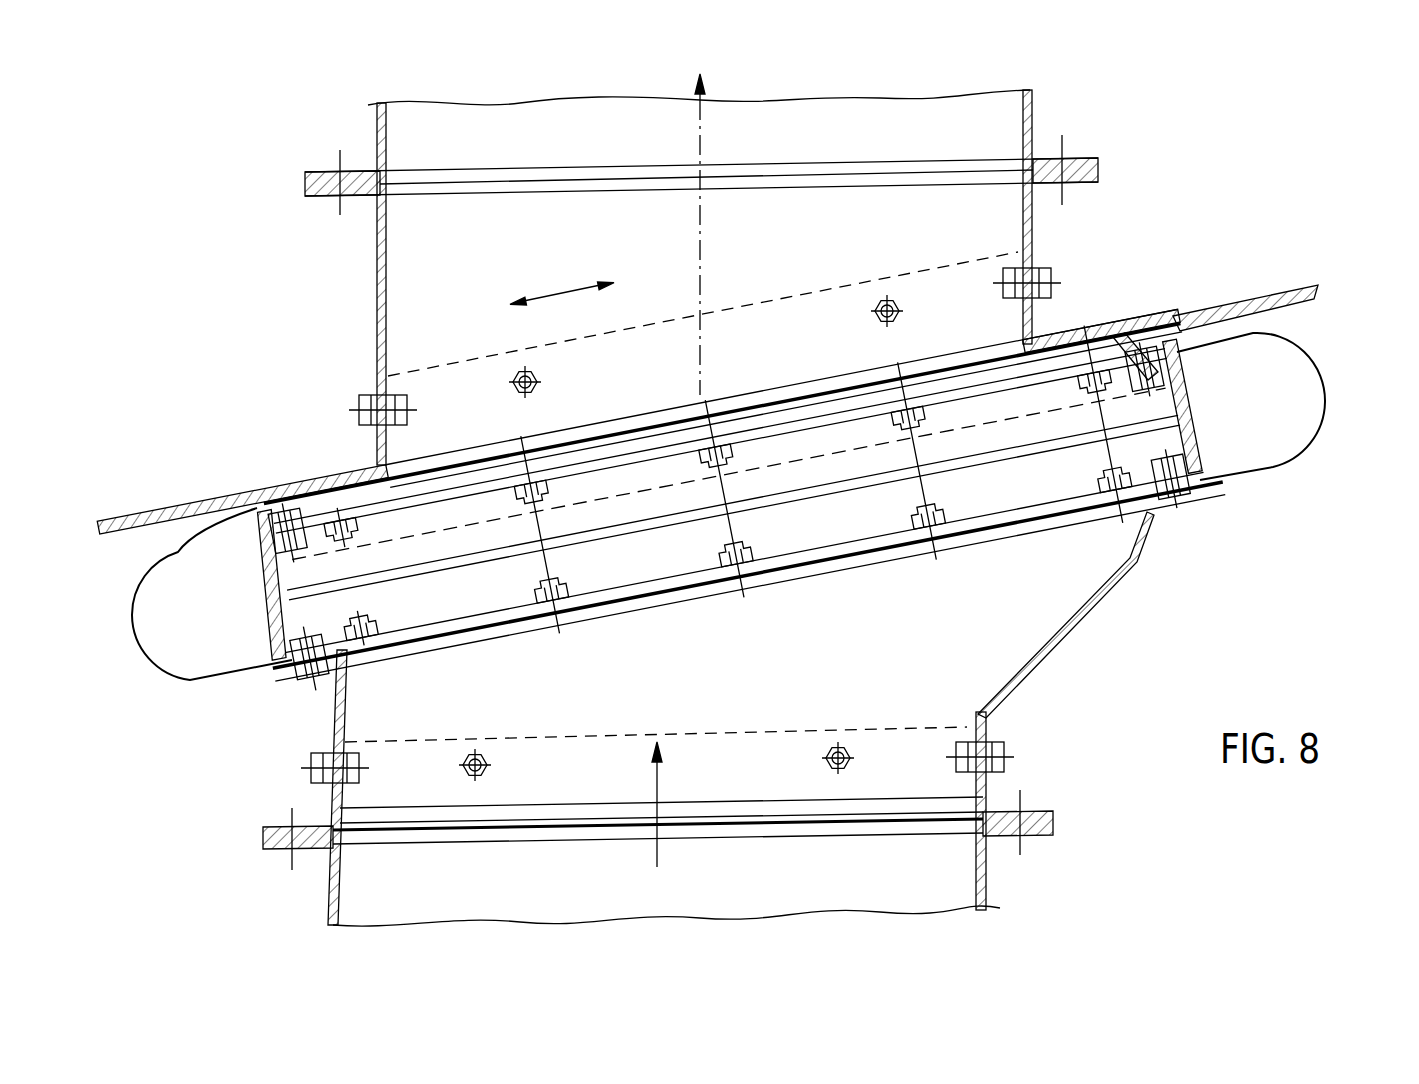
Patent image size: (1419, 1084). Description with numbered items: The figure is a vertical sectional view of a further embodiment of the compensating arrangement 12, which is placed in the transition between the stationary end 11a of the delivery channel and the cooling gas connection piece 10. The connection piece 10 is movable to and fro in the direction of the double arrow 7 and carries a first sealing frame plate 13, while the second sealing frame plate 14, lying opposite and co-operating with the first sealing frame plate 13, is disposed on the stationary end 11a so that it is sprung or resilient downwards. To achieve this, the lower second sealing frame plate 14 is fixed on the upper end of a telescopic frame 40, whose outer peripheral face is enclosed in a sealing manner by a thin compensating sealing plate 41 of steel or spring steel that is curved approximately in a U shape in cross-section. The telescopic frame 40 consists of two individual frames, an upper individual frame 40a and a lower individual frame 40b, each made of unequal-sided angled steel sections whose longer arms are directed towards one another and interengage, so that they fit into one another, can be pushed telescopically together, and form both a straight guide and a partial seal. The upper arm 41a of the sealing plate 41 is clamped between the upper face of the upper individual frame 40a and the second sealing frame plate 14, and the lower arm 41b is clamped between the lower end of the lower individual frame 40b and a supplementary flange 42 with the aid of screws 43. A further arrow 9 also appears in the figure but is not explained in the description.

The double arrow 7 is at (562, 293).
The viewing direction 9 is at (660, 780).
The cooling gas connection piece 10 is at (993, 233).
The stationary end of the delivery channel 11a is at (986, 710).
The compensating arrangement 12 is at (318, 422).
The first sealing frame plate 13 is at (1212, 306).
The second sealing frame plate 14 is at (1187, 324).
The telescopic frame 40 is at (250, 607).
The upper individual frame 40a is at (235, 548).
The lower individual frame 40b is at (270, 627).
The compensating sealing plate 41 is at (1328, 398).
The upper arm of the sealing plate 41a is at (1198, 346).
The lower arm of the sealing plate 41b is at (1208, 485).
The supplementary flange 42 is at (300, 675).
The screws 43 is at (307, 550).